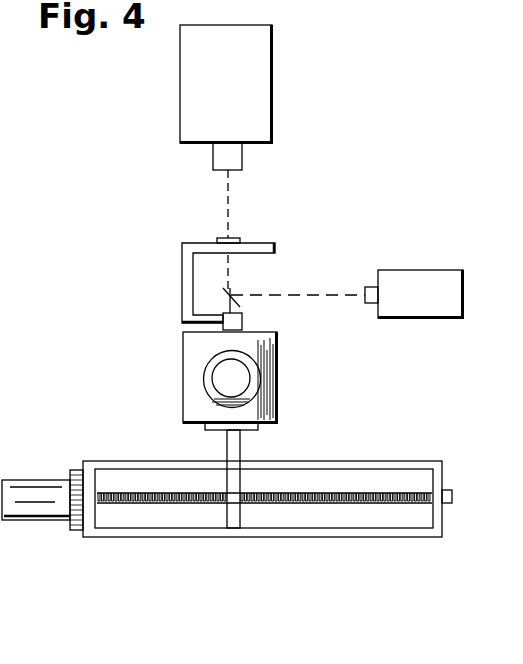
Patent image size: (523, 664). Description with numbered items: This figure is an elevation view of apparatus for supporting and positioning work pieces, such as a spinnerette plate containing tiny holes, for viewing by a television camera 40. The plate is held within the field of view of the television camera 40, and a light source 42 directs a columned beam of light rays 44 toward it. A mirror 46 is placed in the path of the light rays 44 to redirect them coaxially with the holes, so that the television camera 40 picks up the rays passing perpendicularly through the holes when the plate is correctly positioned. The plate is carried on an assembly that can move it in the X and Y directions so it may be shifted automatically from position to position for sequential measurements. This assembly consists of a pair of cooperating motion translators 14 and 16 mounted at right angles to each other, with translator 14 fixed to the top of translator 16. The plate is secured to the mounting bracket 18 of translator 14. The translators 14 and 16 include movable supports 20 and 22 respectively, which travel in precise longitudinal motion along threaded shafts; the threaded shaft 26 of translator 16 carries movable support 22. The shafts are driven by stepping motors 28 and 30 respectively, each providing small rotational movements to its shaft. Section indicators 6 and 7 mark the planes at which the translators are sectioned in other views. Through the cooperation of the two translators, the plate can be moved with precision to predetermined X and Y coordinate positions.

The television camera 40 is at (180, 118).
The section line 6- 6 is at (222, 221).
The mounting bracket 18 is at (183, 250).
The mirror 46 is at (222, 290).
The movable support 20 is at (244, 323).
The light rays 44 is at (310, 295).
The light source 42 is at (425, 269).
The motion translator 14 is at (182, 374).
The stepping motor 28 is at (255, 393).
The movable support 22 is at (243, 451).
The motion translator 16 is at (402, 456).
The threaded shaft 26 is at (320, 492).
The stepping motor 30 is at (35, 488).
The section line 7- 7 is at (149, 435).